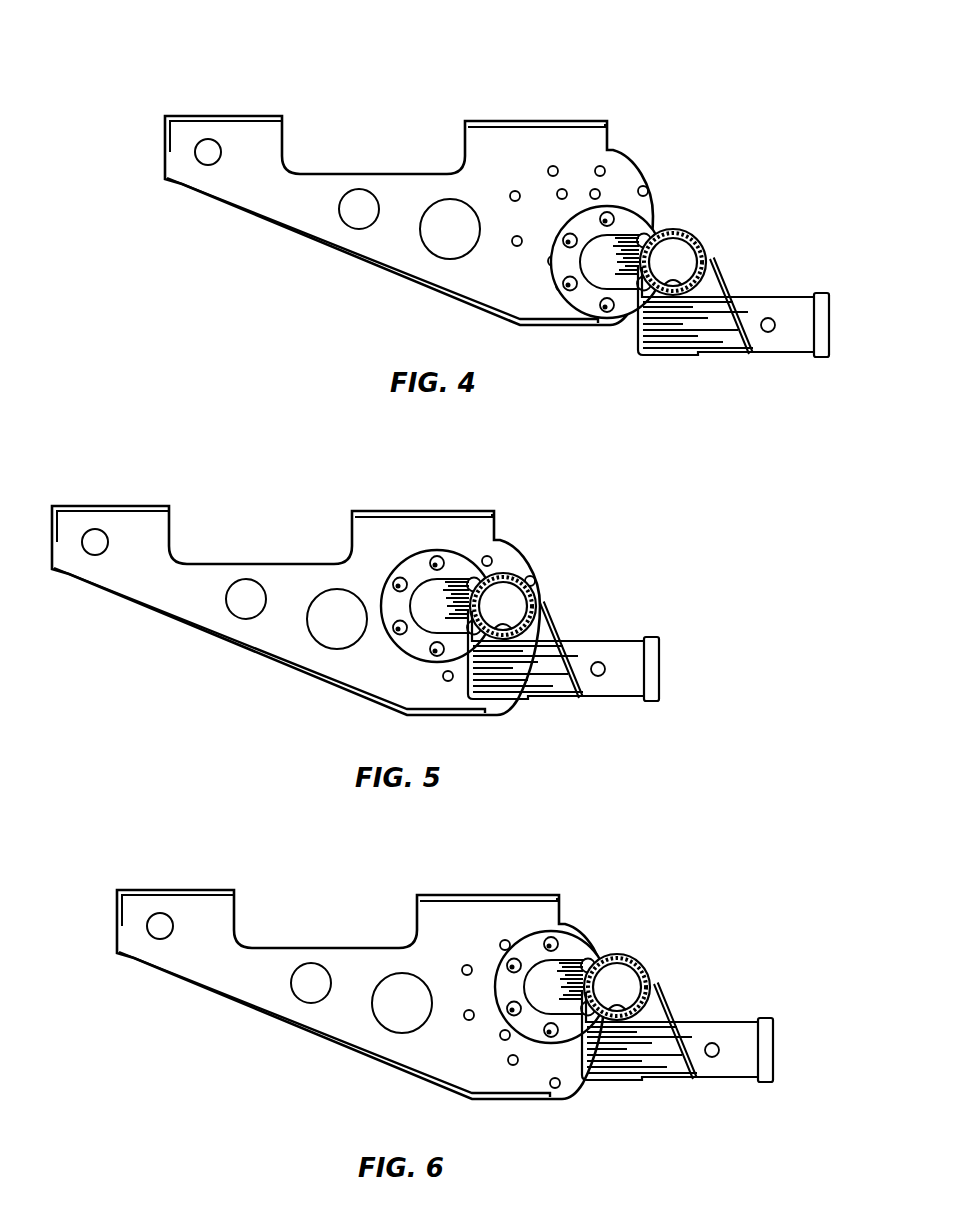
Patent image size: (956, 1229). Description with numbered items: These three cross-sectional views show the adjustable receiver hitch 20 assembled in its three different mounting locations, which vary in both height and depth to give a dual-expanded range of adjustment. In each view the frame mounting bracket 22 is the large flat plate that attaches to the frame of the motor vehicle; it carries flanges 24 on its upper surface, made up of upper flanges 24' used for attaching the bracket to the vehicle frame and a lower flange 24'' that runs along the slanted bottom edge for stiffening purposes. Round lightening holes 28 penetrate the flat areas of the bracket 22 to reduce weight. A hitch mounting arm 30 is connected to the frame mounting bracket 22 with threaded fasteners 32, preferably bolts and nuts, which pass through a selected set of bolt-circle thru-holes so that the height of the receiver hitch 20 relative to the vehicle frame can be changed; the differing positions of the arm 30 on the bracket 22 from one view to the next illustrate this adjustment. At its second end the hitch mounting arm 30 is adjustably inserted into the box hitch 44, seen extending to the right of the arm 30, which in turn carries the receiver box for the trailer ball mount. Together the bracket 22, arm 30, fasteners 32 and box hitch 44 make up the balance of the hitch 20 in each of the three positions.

In FIG. 4, the adjustable receiver hitch 20 is at (443, 225).
In FIG. 5, the adjustable receiver hitch 20 is at (384, 580).
In FIG. 6, the adjustable receiver hitch 20 is at (407, 974).
In FIG. 4, the frame mounting bracket 22 is at (409, 167).
In FIG. 5, the frame mounting bracket 22 is at (296, 568).
In FIG. 6, the frame mounting bracket 22 is at (360, 961).
In FIG. 4, the flanges 24 is at (536, 125).
In FIG. 5, the flanges 24 is at (423, 515).
In FIG. 6, the flanges 24 is at (488, 899).
In FIG. 4, the upper surface flange 24' is at (226, 136).
In FIG. 5, the upper surface flange 24' is at (113, 526).
In FIG. 6, the upper surface flange 24' is at (178, 910).
In FIG. 4, the lower surface flange 24'' is at (382, 250).
In FIG. 5, the lower surface flange 24'' is at (269, 640).
In FIG. 6, the lower surface flange 24'' is at (334, 1024).
In FIG. 4, the lightening holes 28 is at (452, 264).
In FIG. 5, the lightening holes 28 is at (340, 652).
In FIG. 6, the lightening holes 28 is at (390, 1032).
In FIG. 4, the hitch mounting arm 30 is at (700, 242).
In FIG. 5, the hitch mounting arm 30 is at (545, 602).
In FIG. 6, the hitch mounting arm 30 is at (650, 978).
In FIG. 4, the threaded fasteners 32 is at (610, 213).
In FIG. 5, the threaded fasteners 32 is at (440, 563).
In FIG. 6, the threaded fasteners 32 is at (555, 942).
In FIG. 4, the box hitch 44 is at (750, 370).
In FIG. 5, the box hitch 44 is at (614, 716).
In FIG. 6, the box hitch 44 is at (712, 1095).